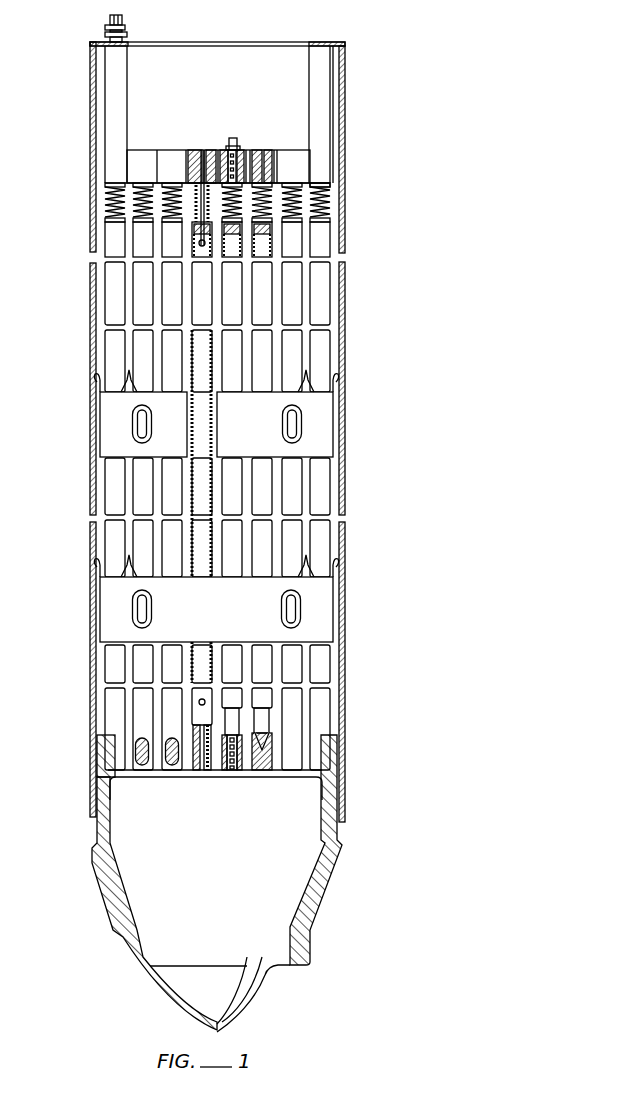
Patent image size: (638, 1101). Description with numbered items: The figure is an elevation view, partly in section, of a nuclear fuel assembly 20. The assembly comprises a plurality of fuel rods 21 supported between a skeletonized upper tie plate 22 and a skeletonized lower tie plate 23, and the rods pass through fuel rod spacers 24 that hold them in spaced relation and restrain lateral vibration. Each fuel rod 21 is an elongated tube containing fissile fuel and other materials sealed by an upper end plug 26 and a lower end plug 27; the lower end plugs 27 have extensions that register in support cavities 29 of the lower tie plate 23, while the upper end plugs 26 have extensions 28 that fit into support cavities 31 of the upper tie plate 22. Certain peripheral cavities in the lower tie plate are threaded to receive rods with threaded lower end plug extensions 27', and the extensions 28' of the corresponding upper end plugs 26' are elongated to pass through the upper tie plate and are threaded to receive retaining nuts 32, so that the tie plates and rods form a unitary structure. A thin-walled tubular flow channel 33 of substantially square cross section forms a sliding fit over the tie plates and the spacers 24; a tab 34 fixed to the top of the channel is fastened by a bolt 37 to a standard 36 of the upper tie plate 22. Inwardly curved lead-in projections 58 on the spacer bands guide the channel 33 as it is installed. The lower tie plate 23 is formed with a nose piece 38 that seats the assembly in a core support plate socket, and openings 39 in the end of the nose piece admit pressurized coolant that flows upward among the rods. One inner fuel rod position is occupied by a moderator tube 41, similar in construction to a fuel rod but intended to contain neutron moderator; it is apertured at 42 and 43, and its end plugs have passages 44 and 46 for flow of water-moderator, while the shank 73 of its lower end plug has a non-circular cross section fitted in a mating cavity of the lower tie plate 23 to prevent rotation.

The fuel assembly 20 is at (458, 104).
The fuel rods 21 is at (340, 356).
The upper tie plate 22 is at (103, 185).
The lower tie plate 23 is at (120, 757).
The fuel rod spacers 24 is at (340, 447).
The upper end plugs 26 is at (328, 242).
The upper end plugs 26' is at (316, 257).
The lower end plugs 27 is at (325, 729).
The threaded lower end plug extensions 27' is at (313, 767).
The extensions 28 is at (269, 208).
The extensions 28' is at (340, 185).
The support cavities 29 is at (262, 773).
The support cavities 31 is at (305, 160).
The retaining nuts 32 is at (237, 142).
The flow channel 33 is at (337, 577).
The tab 34 is at (97, 42).
The standard 36 is at (110, 130).
The bolt 37 is at (127, 35).
The nose piece 38 is at (328, 893).
The openings 39 is at (177, 983).
The moderator tube 41 is at (213, 502).
The aperture 42 is at (199, 702).
The aperture 43 is at (199, 243).
The passage 44 is at (201, 150).
The passage 46 is at (207, 773).
The lead-in projections 58 is at (338, 374).
The shank 73 is at (198, 772).